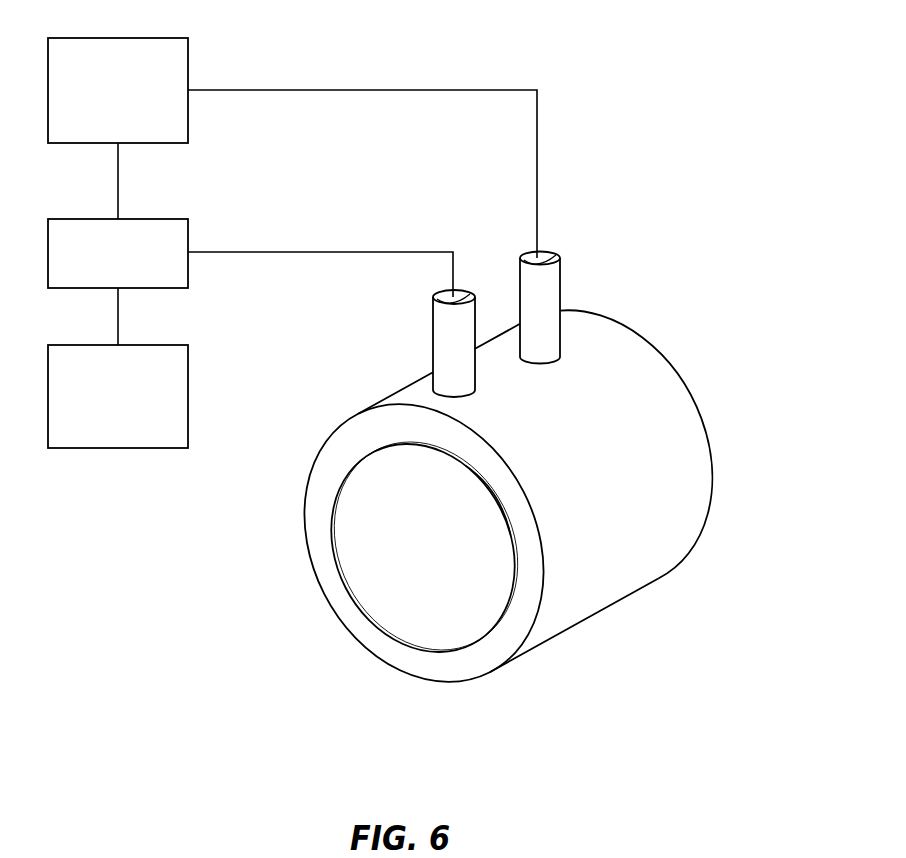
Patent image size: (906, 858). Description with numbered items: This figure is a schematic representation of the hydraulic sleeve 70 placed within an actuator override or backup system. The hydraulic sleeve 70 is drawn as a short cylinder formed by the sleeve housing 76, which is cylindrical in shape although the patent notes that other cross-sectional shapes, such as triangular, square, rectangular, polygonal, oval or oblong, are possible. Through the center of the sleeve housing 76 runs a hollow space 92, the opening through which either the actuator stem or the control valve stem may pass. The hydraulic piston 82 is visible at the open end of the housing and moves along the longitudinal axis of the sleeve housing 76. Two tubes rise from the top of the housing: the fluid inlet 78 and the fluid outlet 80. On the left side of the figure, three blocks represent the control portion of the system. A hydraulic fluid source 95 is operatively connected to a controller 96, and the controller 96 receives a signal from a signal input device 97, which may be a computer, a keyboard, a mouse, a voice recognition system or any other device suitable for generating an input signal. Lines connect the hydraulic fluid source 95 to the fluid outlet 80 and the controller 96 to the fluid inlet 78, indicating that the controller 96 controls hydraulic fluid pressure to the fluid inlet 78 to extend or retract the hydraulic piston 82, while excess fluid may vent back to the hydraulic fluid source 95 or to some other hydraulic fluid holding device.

The hydraulic sleeve 70 is at (496, 466).
The sleeve housing 76 is at (658, 390).
The fluid inlet 78 is at (467, 290).
The fluid outlet 80 is at (553, 252).
The hydraulic piston 82 is at (318, 500).
The hollow space 92 is at (428, 603).
The hydraulic fluid source 95 is at (189, 61).
The controller 96 is at (189, 236).
The signal input device 97 is at (189, 367).